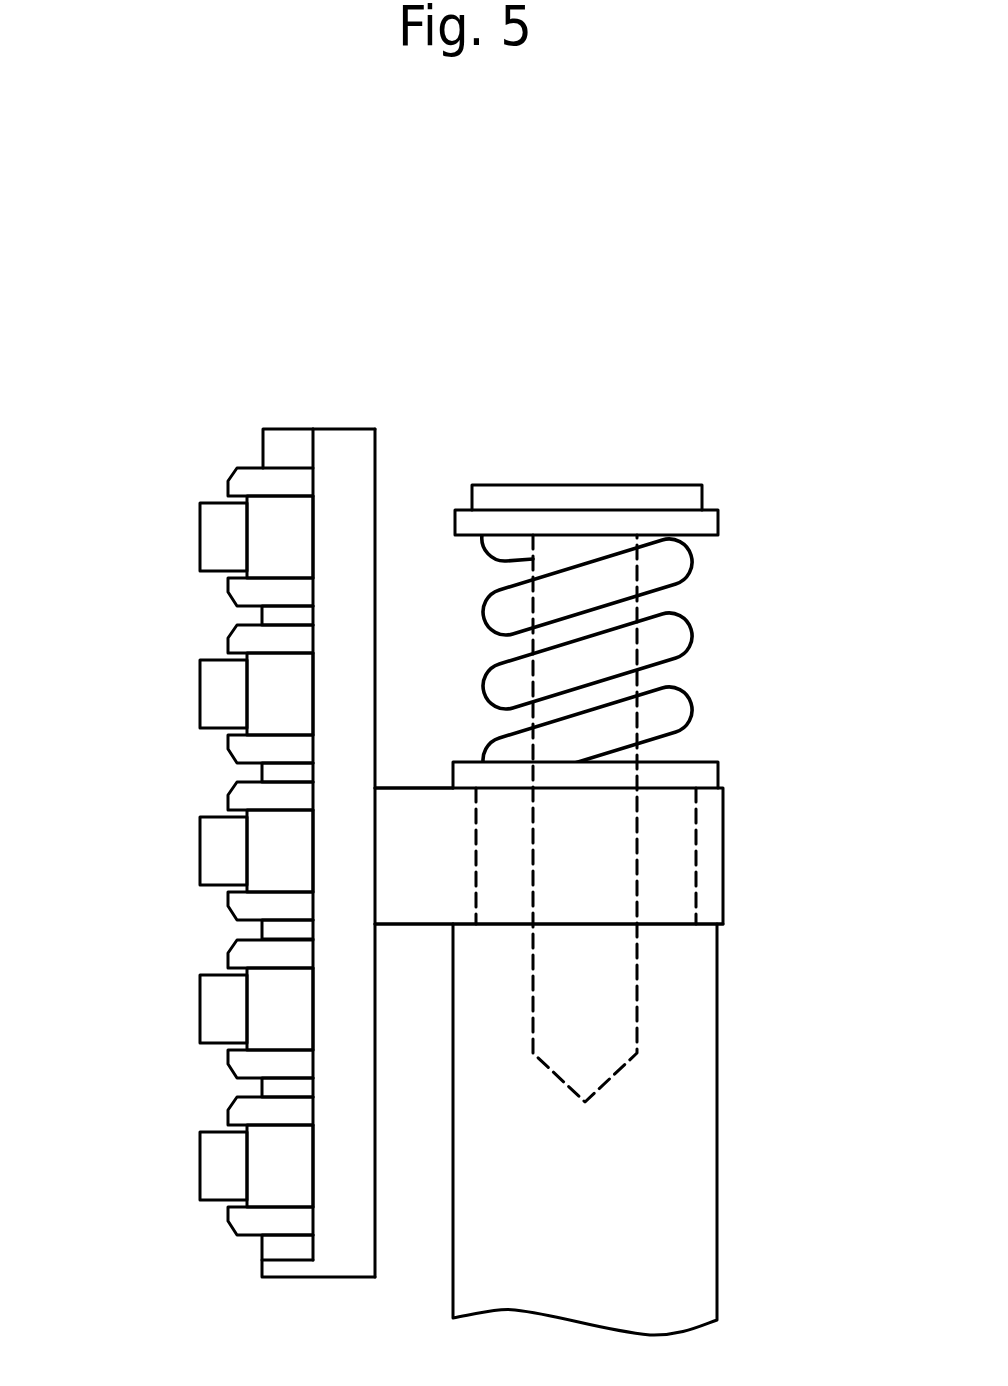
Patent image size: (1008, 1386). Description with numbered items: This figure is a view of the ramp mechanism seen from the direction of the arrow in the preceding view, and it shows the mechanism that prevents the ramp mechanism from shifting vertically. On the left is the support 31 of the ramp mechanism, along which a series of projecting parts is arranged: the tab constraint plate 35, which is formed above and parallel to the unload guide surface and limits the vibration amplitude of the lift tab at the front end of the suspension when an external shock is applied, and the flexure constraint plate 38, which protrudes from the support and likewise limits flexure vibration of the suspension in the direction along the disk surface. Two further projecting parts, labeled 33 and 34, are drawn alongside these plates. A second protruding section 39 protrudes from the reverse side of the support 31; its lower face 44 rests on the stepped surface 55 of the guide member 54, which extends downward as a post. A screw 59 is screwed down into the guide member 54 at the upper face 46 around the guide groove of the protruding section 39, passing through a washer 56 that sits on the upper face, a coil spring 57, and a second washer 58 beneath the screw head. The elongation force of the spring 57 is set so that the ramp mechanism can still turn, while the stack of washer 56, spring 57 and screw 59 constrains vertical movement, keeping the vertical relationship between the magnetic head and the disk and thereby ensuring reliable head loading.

The support 31 is at (333, 848).
The nut 33 is at (247, 478).
The nut 34 is at (248, 590).
The tab constraint plate 35 is at (285, 428).
The flexure constraint plate 38 is at (223, 543).
The second protruding section 39 is at (708, 847).
The lower face 44 is at (415, 925).
The upper face 46 is at (411, 788).
The guide member 54 is at (688, 1078).
The stepped surface 55 is at (718, 915).
The washer 56 is at (720, 774).
The spring 57 is at (668, 645).
The washer 58 is at (703, 526).
The screw 59 is at (676, 488).